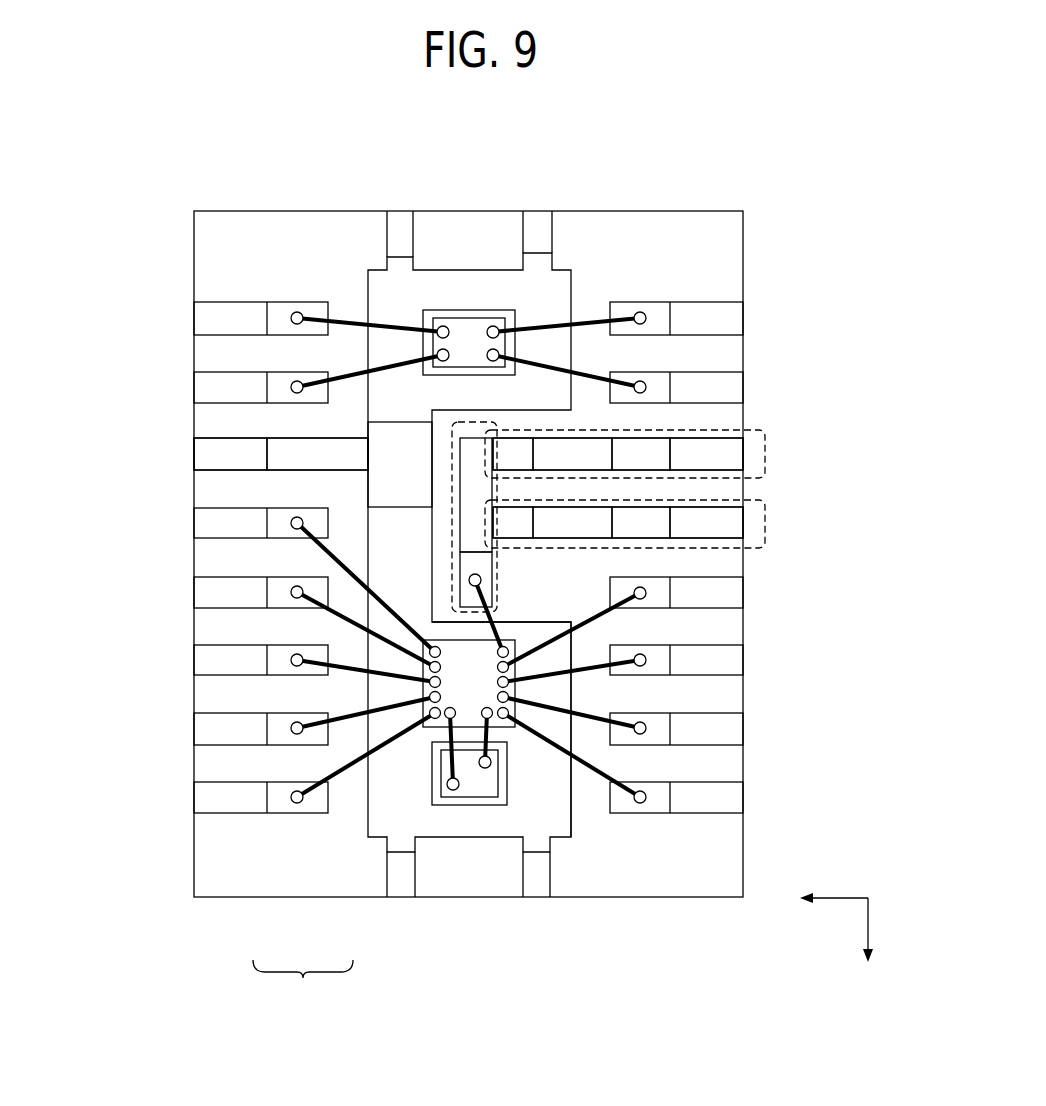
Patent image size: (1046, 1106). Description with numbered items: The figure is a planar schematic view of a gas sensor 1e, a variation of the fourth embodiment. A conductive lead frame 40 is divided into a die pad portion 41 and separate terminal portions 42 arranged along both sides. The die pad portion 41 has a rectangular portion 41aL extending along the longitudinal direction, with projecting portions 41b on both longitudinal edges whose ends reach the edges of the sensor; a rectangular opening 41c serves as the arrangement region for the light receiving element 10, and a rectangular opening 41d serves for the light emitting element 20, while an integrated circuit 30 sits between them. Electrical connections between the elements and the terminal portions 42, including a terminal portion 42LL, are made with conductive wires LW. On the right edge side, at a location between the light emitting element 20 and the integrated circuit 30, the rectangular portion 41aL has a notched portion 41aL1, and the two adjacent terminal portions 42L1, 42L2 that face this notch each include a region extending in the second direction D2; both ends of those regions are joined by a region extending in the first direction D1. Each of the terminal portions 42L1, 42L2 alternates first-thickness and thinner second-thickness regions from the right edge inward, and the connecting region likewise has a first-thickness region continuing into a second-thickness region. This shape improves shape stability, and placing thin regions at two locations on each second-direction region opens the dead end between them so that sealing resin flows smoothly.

The gas sensor 1e is at (690, 176).
The light receiving element 10 is at (470, 780).
The light emitting element 20 is at (468, 345).
The integrated circuit 30 is at (533, 622).
The conductive lead frame 40 is at (303, 986).
The die pad portion 41 is at (378, 825).
The rectangular portion 41aL is at (443, 297).
The notched portion 41aL1 is at (470, 692).
The projecting portions 41b is at (402, 218).
The rectangular opening for light receiving element 41c is at (493, 313).
The rectangular opening for light emitting element 41d is at (485, 800).
The terminal portions 42 is at (230, 800).
The long lead 42LL is at (218, 462).
The terminal portion 42L1 is at (745, 445).
The terminal portion 42L2 is at (745, 515).
The conductive wires LW is at (587, 318).
The first direction D1 is at (881, 930).
The second direction D2 is at (834, 885).